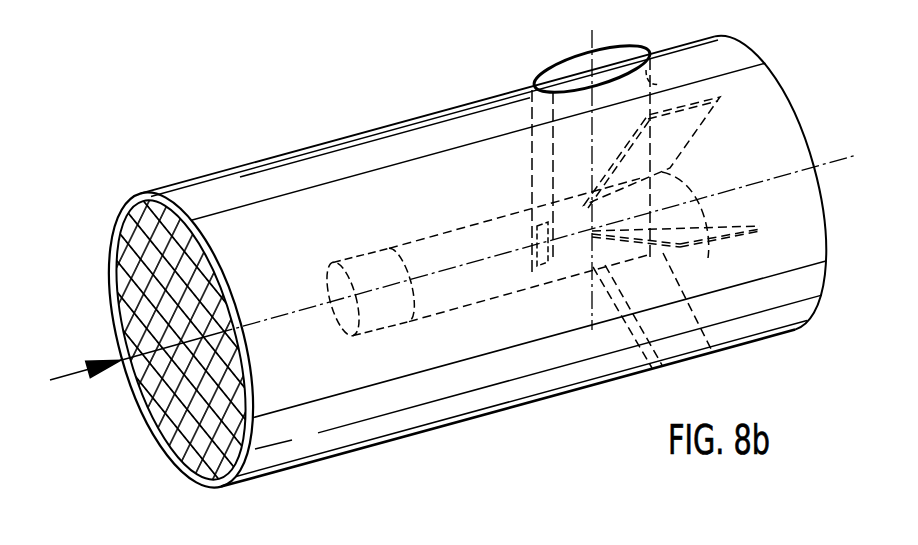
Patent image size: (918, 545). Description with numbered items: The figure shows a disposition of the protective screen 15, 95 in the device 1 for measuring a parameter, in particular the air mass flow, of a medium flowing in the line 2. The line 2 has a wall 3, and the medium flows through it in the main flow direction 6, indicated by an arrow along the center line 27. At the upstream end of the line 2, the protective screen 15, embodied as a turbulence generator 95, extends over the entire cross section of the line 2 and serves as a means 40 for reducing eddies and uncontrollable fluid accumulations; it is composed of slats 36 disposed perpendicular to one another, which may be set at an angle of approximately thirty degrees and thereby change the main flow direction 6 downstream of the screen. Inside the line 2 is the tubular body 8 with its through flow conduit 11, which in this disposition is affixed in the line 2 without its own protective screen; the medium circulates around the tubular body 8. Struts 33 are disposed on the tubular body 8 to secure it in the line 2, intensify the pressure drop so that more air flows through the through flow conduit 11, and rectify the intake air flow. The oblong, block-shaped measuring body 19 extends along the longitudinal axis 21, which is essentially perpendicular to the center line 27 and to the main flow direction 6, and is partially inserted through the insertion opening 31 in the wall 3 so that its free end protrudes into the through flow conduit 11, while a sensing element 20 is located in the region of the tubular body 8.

The device 1 is at (305, 100).
The line 2 is at (211, 197).
The wall 3 is at (467, 402).
The main flow direction 6 is at (63, 383).
The tubular body 8 is at (388, 324).
The through flow conduit 11 is at (458, 250).
The protective screen 15 is at (156, 340).
The turbulence generator 95 is at (156, 340).
The means for reducing eddies 40 is at (200, 425).
The measuring body 19 is at (655, 75).
The nozzle 20 is at (534, 247).
The longitudinal axis 21 is at (592, 290).
The center line 27 is at (830, 158).
The insertion opening 31 is at (562, 65).
The struts 33 is at (688, 118).
The slats 36 is at (133, 262).